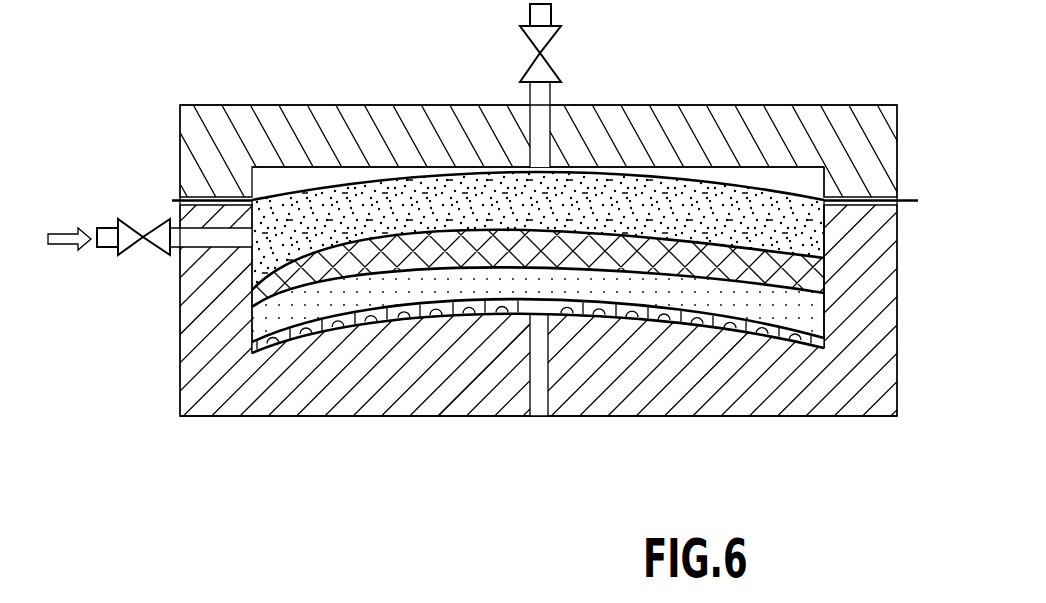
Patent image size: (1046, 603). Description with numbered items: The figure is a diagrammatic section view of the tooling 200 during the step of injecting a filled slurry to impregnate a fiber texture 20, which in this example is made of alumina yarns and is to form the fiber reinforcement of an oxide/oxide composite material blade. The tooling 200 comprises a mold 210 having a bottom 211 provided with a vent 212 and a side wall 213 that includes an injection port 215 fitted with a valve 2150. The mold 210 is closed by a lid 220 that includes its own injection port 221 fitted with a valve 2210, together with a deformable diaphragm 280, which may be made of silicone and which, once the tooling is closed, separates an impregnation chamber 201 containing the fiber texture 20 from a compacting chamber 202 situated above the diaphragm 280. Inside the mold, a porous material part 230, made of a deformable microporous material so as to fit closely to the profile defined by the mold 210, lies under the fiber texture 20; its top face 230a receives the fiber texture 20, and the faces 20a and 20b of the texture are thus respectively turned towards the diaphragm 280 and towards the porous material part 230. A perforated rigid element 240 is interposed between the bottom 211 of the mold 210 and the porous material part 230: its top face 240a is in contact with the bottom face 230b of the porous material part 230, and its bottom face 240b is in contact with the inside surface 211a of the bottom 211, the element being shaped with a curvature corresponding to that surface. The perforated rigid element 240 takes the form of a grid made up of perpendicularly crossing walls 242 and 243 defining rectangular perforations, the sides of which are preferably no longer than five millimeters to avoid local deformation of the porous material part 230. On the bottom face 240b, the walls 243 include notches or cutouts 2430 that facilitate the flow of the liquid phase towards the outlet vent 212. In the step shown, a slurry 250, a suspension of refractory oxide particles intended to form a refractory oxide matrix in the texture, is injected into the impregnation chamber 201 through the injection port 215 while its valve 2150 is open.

The tooling 200 is at (180, 75).
The fiber texture 20 is at (393, 255).
The first surface of membrane 20a is at (607, 235).
The second surface of membrane 20b is at (442, 282).
The impregnation chamber 201 is at (705, 175).
The compacting chamber 202 is at (790, 172).
The mold 210 is at (897, 318).
The bottom 211 is at (737, 403).
The inside surface 211a is at (465, 322).
The vent 212 is at (538, 393).
The side wall 213 is at (855, 238).
The injection port 215 is at (200, 238).
The valve 2150 is at (160, 227).
The lid 220 is at (853, 133).
The injection port 221 is at (543, 93).
The valve 2210 is at (530, 43).
The porous material part 230 is at (781, 340).
The top face 230a is at (775, 260).
The bottom face 230b is at (395, 310).
The perforated rigid element 240 is at (254, 347).
The top face 240a is at (256, 312).
The bottom face 240b is at (330, 322).
The walls 242 is at (267, 352).
The walls 243 is at (833, 341).
The notches or cutouts 2430 is at (703, 324).
The slurry 250 is at (65, 232).
The deformable diaphragm 280 is at (300, 230).